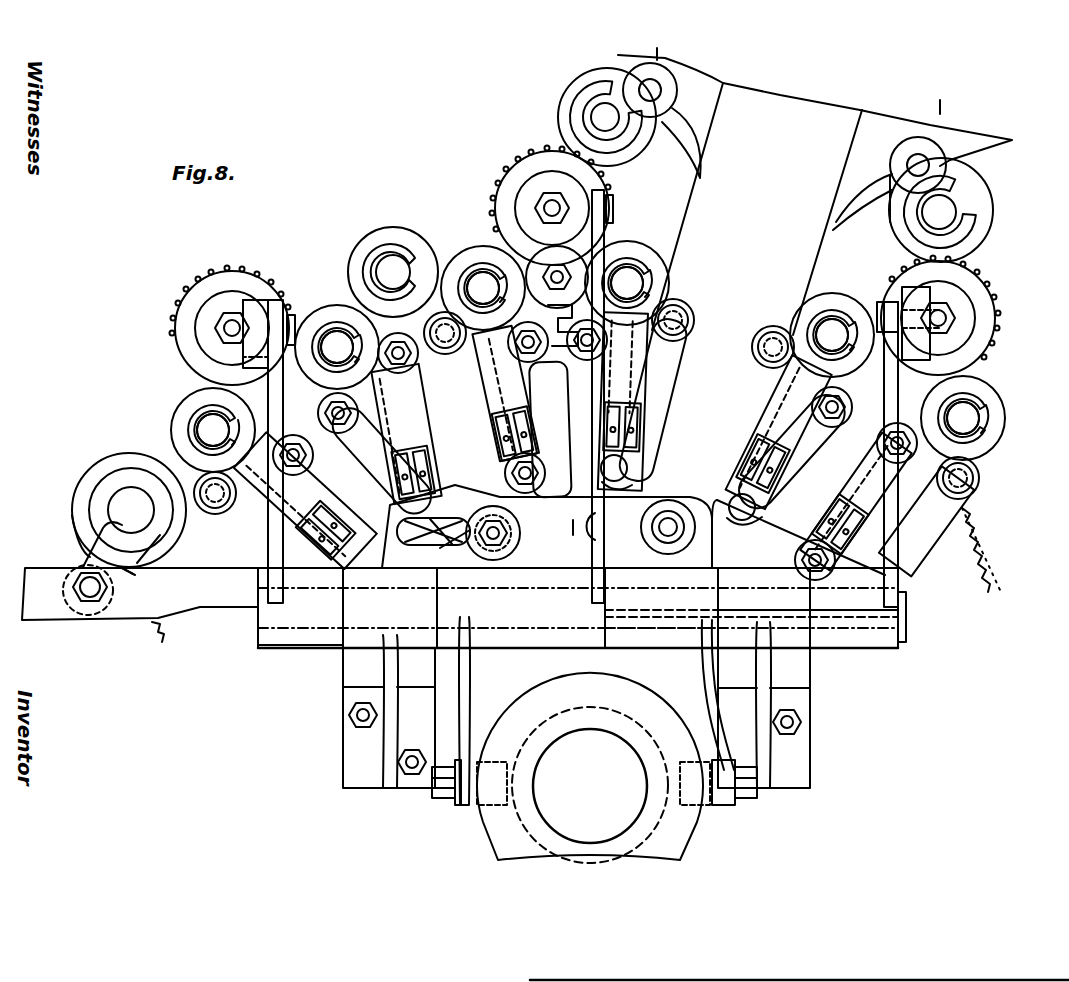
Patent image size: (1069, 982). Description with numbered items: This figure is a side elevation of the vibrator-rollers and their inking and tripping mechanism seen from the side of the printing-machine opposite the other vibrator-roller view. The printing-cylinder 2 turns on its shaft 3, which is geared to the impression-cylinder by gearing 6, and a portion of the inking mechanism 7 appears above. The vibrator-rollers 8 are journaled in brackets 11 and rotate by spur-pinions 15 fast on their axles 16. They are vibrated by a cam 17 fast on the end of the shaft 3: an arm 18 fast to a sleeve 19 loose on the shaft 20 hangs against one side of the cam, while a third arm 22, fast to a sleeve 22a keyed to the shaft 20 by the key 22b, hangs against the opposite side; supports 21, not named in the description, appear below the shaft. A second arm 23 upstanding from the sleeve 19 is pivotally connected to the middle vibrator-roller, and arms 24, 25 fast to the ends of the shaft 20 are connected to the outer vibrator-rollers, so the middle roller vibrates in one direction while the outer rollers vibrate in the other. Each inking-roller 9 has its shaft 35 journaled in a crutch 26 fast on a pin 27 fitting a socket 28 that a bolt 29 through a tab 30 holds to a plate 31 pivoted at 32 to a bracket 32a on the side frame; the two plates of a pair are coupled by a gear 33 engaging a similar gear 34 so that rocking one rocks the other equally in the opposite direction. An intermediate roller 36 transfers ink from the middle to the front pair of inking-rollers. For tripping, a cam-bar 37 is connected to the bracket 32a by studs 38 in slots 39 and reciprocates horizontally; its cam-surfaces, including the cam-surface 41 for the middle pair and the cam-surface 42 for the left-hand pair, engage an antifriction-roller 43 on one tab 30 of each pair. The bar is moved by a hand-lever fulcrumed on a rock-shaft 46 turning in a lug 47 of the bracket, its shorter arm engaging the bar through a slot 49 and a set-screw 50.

The printing-cylinder 2 is at (972, 530).
The shaft of the printing-cylinder 3 is at (590, 786).
The gearing 6 is at (160, 640).
The inking mechanism 7 is at (700, 172).
The vibrator-rollers 8 is at (188, 290).
The inking-rollers 9 is at (588, 356).
The brackets 11 is at (228, 360).
The spur-pinions 15 is at (226, 272).
The axles of the vibrator-rollers 16 is at (232, 328).
The cam 17 is at (593, 768).
The arm 18 is at (470, 680).
The sleeve 19 is at (525, 645).
The shaft 20 is at (906, 618).
The support 21 is at (828, 718).
The third arm 22 is at (712, 690).
The sleeve 22a is at (630, 630).
The key 22b is at (715, 610).
The second arm 23 is at (600, 540).
The arm 24 is at (268, 546).
The arm 25 is at (900, 560).
The crutch 26 is at (200, 440).
The pin 27 is at (320, 490).
The socket 28 is at (300, 470).
The bolt 29 is at (420, 530).
The tab 30 is at (650, 485).
The plate 31 is at (604, 444).
The pivot 32 is at (213, 496).
The bracket 32a is at (667, 400).
The gear 33 is at (562, 452).
The gear 34 is at (566, 350).
The shaft of the inking-roller 35 is at (588, 356).
The intermediate roller 36 is at (393, 272).
The cam-bar 37 is at (633, 530).
The studs 38 is at (505, 528).
The slots 39 is at (513, 520).
The cam-surface 41 is at (582, 480).
The cam-surface 42 is at (750, 562).
The antifriction-roller 43 is at (333, 570).
The rock-shaft 46 is at (131, 510).
The lug 47 is at (78, 500).
The slot 49 is at (95, 563).
The set-screw 50 is at (88, 592).